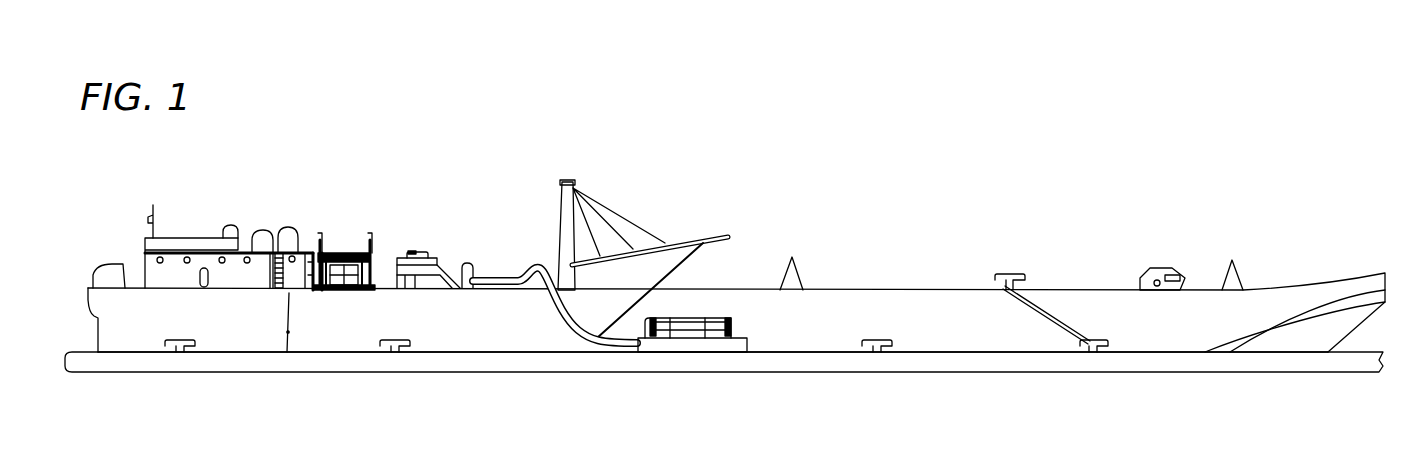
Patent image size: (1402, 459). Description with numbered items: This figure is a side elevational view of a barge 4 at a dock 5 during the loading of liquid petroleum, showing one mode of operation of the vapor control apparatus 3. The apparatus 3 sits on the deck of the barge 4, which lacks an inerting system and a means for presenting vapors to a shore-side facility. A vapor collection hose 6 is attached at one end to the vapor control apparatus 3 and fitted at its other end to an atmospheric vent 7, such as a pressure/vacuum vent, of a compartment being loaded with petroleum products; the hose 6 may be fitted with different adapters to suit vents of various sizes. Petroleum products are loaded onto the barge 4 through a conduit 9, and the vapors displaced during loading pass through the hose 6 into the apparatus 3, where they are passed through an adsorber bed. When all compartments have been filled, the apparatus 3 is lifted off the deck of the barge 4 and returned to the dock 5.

The vapor control apparatus 3 is at (358, 233).
The barge 4 is at (1087, 254).
The dock 5 is at (820, 329).
The vapor collection hose 6 is at (304, 285).
The atmospheric vent 7 is at (307, 292).
The conduit 9 is at (541, 318).